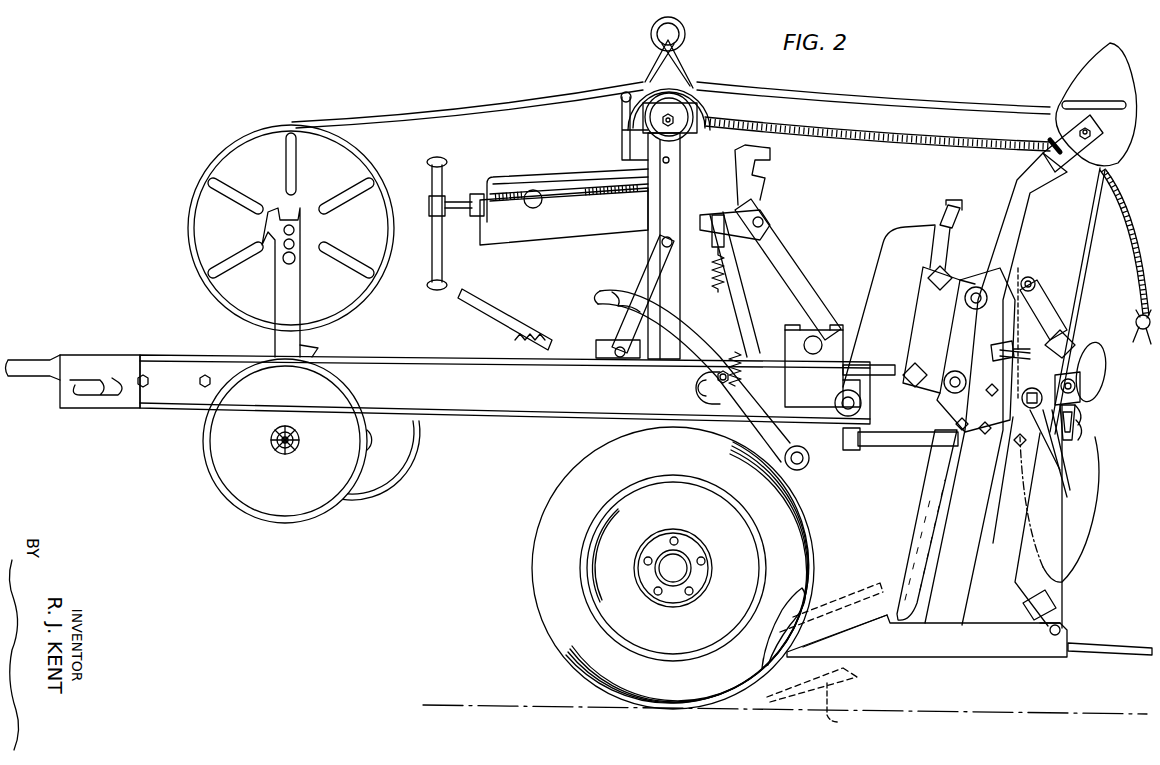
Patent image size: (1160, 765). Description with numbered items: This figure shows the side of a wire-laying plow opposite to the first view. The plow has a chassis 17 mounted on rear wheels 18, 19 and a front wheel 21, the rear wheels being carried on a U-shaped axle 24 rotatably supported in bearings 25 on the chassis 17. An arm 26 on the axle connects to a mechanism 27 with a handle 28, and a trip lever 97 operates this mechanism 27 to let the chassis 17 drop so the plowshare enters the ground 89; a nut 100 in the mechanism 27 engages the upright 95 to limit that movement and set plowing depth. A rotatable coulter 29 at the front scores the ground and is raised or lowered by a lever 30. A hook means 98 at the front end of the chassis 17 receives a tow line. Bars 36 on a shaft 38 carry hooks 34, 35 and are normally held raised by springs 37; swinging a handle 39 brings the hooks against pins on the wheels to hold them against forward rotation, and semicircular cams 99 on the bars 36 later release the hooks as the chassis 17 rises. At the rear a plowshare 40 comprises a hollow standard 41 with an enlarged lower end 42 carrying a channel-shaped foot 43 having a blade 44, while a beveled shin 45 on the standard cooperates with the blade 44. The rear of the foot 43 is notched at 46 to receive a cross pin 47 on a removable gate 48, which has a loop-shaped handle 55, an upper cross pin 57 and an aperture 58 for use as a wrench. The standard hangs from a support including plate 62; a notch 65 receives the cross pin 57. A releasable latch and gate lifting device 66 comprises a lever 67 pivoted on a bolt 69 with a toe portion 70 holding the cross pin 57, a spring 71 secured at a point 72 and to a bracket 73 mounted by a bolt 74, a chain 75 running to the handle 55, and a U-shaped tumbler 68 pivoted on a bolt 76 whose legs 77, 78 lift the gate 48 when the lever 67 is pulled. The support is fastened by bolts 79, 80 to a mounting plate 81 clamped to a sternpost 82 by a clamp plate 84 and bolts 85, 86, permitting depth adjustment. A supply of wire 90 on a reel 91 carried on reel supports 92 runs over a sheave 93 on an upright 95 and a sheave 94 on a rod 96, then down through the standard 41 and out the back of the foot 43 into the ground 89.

The chassis 17 is at (486, 416).
The rear wheel 18 is at (776, 655).
The rear wheel 19 is at (543, 590).
The front wheel 21 is at (280, 518).
The U-shaped axle 24 is at (818, 340).
The bearings 25 is at (845, 341).
The arm 26 is at (790, 272).
The mechanism 27 is at (528, 234).
The handle 28 is at (437, 158).
The coulter 29 is at (370, 505).
The lever 30 is at (488, 300).
The hook 34 is at (653, 327).
The hook 35 is at (603, 296).
The bar 36 is at (758, 396).
The spring 37 is at (727, 288).
The shaft 38 is at (803, 462).
The handle 39 is at (722, 302).
The plowshare 40 is at (915, 508).
The hollow standard 41 is at (1030, 500).
The enlarged lower end 42 is at (985, 625).
The foot 43 is at (880, 650).
The blade 44 is at (850, 630).
The beveled shin 45 is at (925, 539).
The notch 46 is at (1050, 636).
The cross pin 47 is at (1062, 627).
The gate 48 is at (1053, 538).
The loop-shaped handle 55 is at (1095, 346).
The cross pin 57 is at (1068, 440).
The aperture 58 is at (1050, 606).
The plate 62 is at (1022, 284).
The notch 65 is at (1075, 414).
The releasable latch and gate lifting device 66 is at (1082, 430).
The lever 67 is at (1052, 327).
The tumbler 68 is at (1030, 420).
The bolt 69 is at (1080, 385).
The toe portion 70 is at (1080, 406).
The spring 71 is at (1010, 360).
The point 72 is at (1075, 382).
The bracket 73 is at (1018, 342).
The bolt 74 is at (993, 350).
The chain 75 is at (1078, 302).
The bolt 76 is at (1028, 401).
The leg member 77 is at (1082, 395).
The leg member 78 is at (1058, 450).
The bolt 79 is at (968, 300).
The bolt 80 is at (950, 378).
The mounting plate 81 is at (976, 284).
The sternpost 82 is at (938, 232).
The clamp plate 84 is at (912, 308).
The bolt 85 is at (928, 278).
The bolt 86 is at (912, 372).
The ground 89 is at (520, 705).
The wire 90 is at (430, 110).
The reel 91 is at (232, 142).
The reel support 92 is at (295, 322).
The sheave 93 is at (700, 95).
The sheave 94 is at (1050, 125).
The upright 95 is at (682, 158).
The rod 96 is at (1010, 218).
The trip lever 97 is at (622, 112).
The hook means 98 is at (55, 380).
The semicircular cam 99 is at (705, 400).
The nut 100 is at (533, 190).